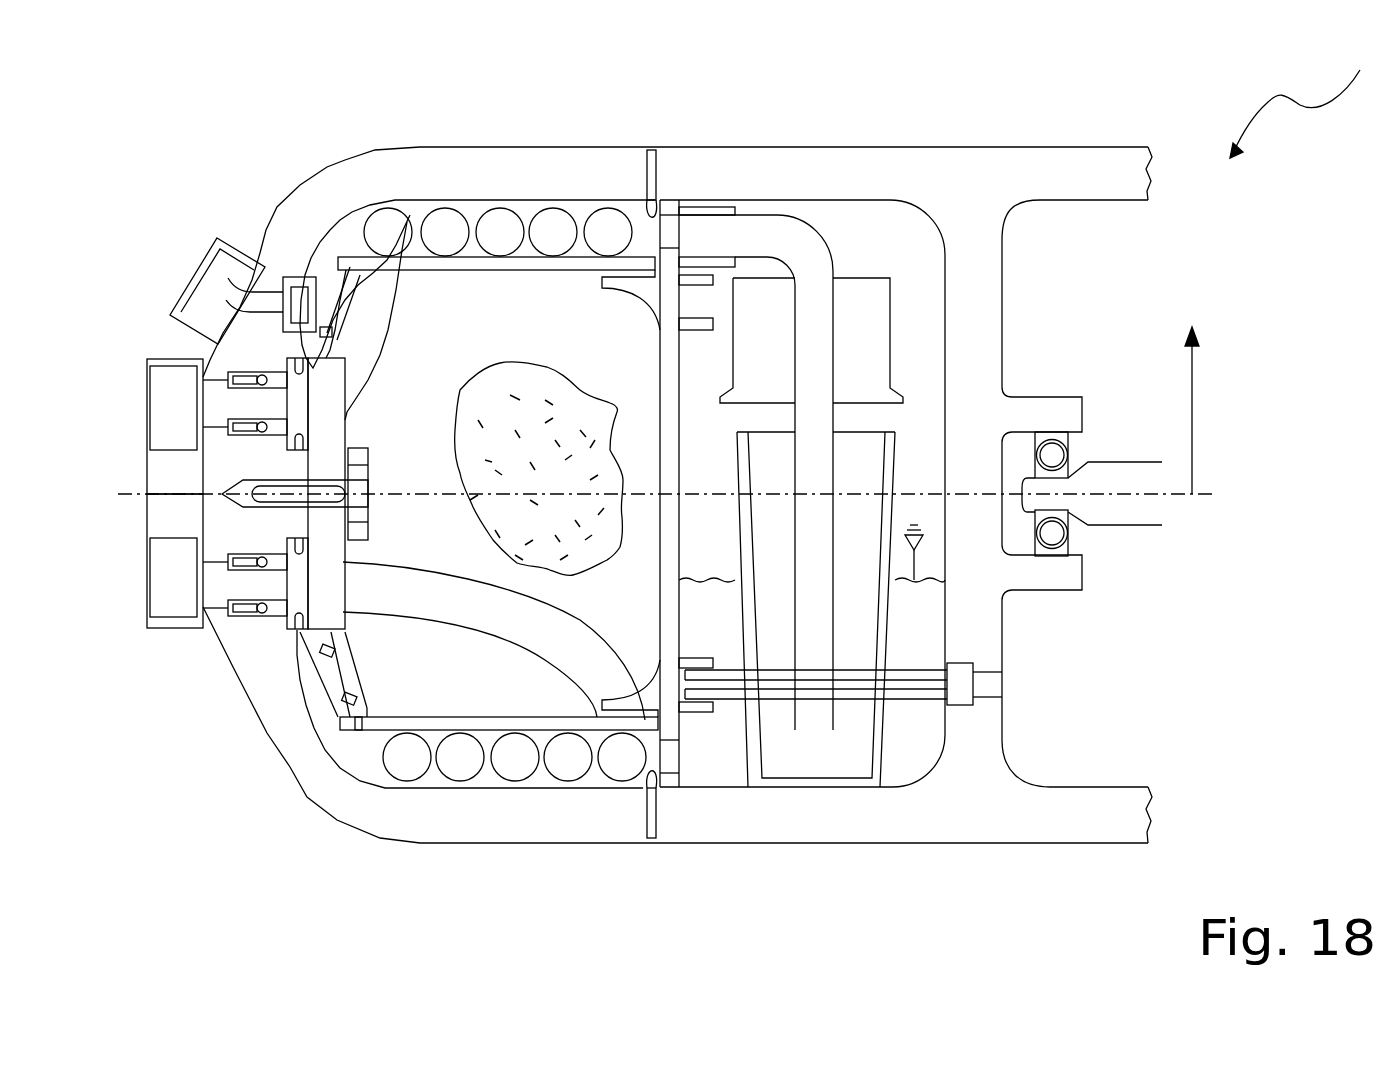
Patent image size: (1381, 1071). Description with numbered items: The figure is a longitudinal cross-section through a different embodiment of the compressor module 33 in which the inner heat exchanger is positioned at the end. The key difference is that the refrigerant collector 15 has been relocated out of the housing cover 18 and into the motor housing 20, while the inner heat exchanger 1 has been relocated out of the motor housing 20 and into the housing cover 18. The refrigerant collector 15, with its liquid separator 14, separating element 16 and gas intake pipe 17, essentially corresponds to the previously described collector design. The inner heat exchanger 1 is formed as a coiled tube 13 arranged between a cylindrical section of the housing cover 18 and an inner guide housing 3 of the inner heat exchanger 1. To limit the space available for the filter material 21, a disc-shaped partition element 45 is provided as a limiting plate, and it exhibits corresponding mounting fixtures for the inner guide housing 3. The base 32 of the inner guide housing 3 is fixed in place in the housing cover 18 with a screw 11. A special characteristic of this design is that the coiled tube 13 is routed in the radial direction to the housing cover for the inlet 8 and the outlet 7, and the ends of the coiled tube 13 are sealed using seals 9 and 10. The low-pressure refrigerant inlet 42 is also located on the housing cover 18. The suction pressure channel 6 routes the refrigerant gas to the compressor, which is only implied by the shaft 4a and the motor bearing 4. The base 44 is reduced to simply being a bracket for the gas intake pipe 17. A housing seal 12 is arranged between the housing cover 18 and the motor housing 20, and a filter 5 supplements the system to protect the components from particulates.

The inner heat exchanger 1 is at (500, 230).
The inner guide housing 3 is at (553, 258).
The motor bearing 4 is at (1052, 452).
The shaft 4a is at (1110, 512).
The filter 5 is at (667, 678).
The suction pressure channel 6 is at (983, 690).
The outlet 7 is at (163, 420).
The inlet 8 is at (158, 578).
The seal 9 is at (262, 611).
The seal 10 is at (262, 378).
The screw 11 is at (363, 488).
The housing seal 12 is at (650, 808).
The coiled tube 13 is at (515, 772).
The liquid separator 14 is at (862, 303).
The refrigerant collector 15 is at (932, 618).
The separating element 16 is at (897, 458).
The gas intake pipe 17 is at (775, 237).
The housing cover 18 is at (353, 182).
The motor housing 20 is at (997, 158).
The filter material 21 is at (515, 393).
The base 32 is at (320, 647).
The compressor module 33 is at (1305, 100).
The low-pressure refrigerant inlet 42 is at (205, 268).
The base 44 is at (670, 208).
The partition element 45 is at (667, 443).